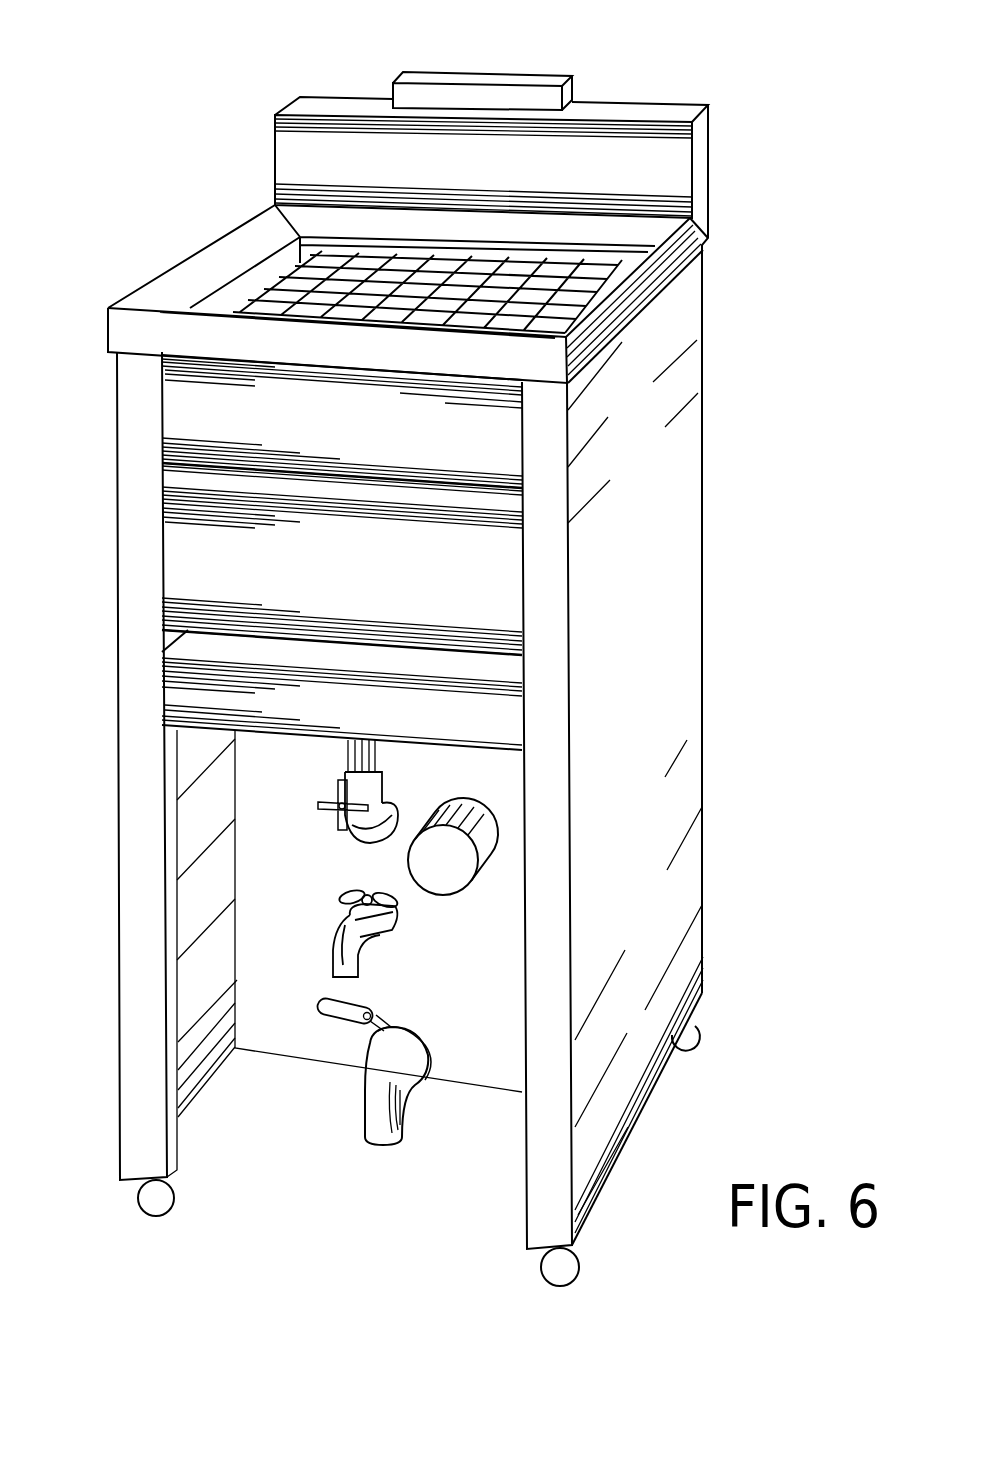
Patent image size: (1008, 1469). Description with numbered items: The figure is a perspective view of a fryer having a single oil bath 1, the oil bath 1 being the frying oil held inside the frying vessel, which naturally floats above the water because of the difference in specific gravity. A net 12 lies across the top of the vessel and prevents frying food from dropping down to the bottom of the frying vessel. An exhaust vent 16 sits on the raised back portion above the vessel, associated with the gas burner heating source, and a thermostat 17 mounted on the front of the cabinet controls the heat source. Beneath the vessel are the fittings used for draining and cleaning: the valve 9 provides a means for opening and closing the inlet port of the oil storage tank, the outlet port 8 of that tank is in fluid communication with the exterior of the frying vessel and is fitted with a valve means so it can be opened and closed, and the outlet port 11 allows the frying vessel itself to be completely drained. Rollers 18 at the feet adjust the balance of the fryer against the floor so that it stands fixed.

The oil bath 1 is at (236, 282).
The outlet port 8 is at (397, 907).
The valve 9 is at (378, 790).
The outlet port 11 is at (367, 1108).
The net 12 is at (615, 272).
The exhaust vent 16 is at (422, 95).
The thermostat 17 is at (457, 850).
The rollers 18 is at (153, 1216).